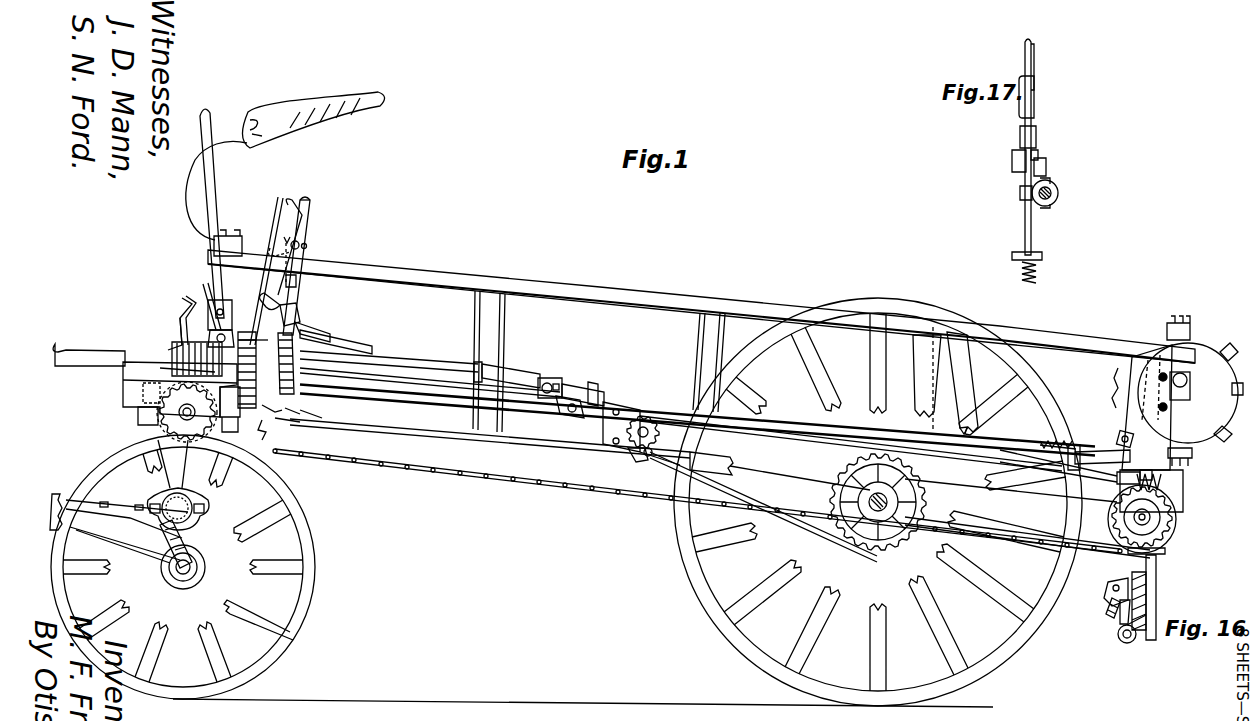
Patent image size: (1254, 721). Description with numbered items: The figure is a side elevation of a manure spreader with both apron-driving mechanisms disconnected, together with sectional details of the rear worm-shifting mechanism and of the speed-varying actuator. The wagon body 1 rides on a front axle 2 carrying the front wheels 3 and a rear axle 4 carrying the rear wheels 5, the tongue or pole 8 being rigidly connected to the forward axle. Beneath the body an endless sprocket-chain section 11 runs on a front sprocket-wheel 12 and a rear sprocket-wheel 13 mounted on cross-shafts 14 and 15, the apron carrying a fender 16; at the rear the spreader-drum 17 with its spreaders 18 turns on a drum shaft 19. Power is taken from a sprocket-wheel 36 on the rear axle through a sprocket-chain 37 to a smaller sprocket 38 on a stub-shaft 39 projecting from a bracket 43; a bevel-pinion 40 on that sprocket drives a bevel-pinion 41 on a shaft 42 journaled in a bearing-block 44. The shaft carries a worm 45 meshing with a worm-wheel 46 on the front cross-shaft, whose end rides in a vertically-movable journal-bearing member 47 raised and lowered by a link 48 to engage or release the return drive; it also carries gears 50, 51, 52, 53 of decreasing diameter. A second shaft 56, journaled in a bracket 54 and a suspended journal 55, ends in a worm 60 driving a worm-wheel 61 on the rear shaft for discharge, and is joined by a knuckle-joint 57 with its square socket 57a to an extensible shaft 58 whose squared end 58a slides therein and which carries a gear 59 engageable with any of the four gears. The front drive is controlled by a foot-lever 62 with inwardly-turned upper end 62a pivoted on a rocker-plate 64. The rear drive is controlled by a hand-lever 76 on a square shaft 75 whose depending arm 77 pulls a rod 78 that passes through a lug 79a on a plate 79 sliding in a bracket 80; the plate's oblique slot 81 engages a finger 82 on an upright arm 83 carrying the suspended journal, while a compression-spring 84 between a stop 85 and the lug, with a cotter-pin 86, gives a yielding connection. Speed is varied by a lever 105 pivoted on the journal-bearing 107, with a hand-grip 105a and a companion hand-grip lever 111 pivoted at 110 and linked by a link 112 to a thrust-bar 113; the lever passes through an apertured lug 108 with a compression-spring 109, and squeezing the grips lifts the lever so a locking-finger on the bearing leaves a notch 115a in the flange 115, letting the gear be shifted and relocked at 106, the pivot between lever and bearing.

In FIG. 1, the body 1 is at (668, 300).
In FIG. 1, the front axle 2 is at (198, 548).
In FIG. 1, the front wheels 3 is at (318, 543).
In FIG. 1, the rear axle 4 is at (878, 502).
In FIG. 1, the rear wheels 5 is at (700, 594).
In FIG. 1, the tongue or pole 8 is at (66, 498).
In FIG. 1, the sprocket-chain section 11 is at (562, 486).
In FIG. 1, the front sprocket-wheel 12 is at (150, 424).
In FIG. 1, the rear sprocket-wheel 13 is at (1176, 530).
In FIG. 1, the front cross-shaft 14 is at (176, 490).
In FIG. 1, the rear cross-shaft 15 is at (1166, 551).
In FIG. 1, the fender 16 is at (1142, 391).
In FIG. 1, the spreader-drum 17 is at (280, 253).
In FIG. 1, the spreaders 18 is at (1195, 456).
In FIG. 1, the drum shaft 19 is at (1188, 372).
In FIG. 1, the sprocket-wheel 36 is at (842, 470).
In FIG. 1, the sprocket-chain 37 is at (798, 516).
In FIG. 1, the smaller sprocket 38 is at (695, 457).
In FIG. 1, the stub-shaft 39 is at (650, 462).
In FIG. 1, the bevel-pinion 40 is at (636, 468).
In FIG. 1, the bevel-pinion 41 is at (622, 455).
In FIG. 1, the shaft 42 is at (536, 422).
In FIG. 1, the bracket 43 is at (636, 408).
In FIG. 1, the bearing-block 44 is at (236, 370).
In FIG. 1, the worm 45 is at (165, 376).
In FIG. 1, the worm-wheel 46 is at (153, 392).
In FIG. 1, the journal-bearing member 47 is at (138, 412).
In FIG. 1, the link 48 is at (187, 412).
In FIG. 1, the gear 50 is at (232, 409).
In FIG. 1, the gear 51 is at (275, 412).
In FIG. 1, the gear 52 is at (300, 414).
In FIG. 1, the gear 53 is at (320, 416).
In FIG. 1, the bracket 54 is at (576, 392).
In FIG. 1, the suspended journal 55 is at (1114, 487).
In FIG. 1, the shaft 56 is at (832, 428).
In FIG. 1, the knuckle-joint 57 is at (548, 380).
In FIG. 1, the square socket 57a is at (512, 372).
In FIG. 1, the shaft 58 is at (412, 362).
In FIG. 1, the squared end 58a is at (468, 374).
In FIG. 1, the gear 59 is at (260, 271).
In FIG. 1, the worm 60 is at (1184, 487).
In FIG. 1, the worm-wheel 61 is at (1172, 512).
In FIG. 1, the foot-lever 62 is at (181, 325).
In FIG. 1, the inwardly-turned upper end 62a is at (183, 300).
In FIG. 1, the rocker-plate 64 is at (172, 355).
In FIG. 1, the square shaft 75 is at (208, 302).
In FIG. 1, the hand-lever 76 is at (218, 150).
In FIG. 1, the depending arm 77 is at (214, 337).
In FIG. 1, the rod 78 is at (440, 398).
In FIG. 1, the plate 79 is at (1112, 450).
In FIG. 1, the lug 79a is at (1058, 475).
In FIG. 1, the bracket 80 is at (1135, 440).
In FIG. 1, the oblique slot 81 is at (1118, 420).
In FIG. 16, the finger 82 is at (1106, 604).
In FIG. 1, the upright arm 83 is at (1154, 474).
In FIG. 1, the compression-spring 84 is at (1056, 433).
In FIG. 1, the stop 85 is at (1042, 444).
In FIG. 1, the cotter-pin 86 is at (1078, 448).
In FIG. 1, the lever 105 is at (304, 266).
In FIG. 1, the hand-grip 105a is at (300, 226).
In FIG. 1, the pivot 106 is at (290, 342).
In FIG. 1, the journal-bearing 107 is at (298, 313).
In FIG. 1, the apertured lug 108 is at (298, 423).
In FIG. 1, the compression-spring 109 is at (274, 435).
In FIG. 1, the pivot 110 is at (306, 243).
In FIG. 1, the companion hand-grip lever 111 is at (313, 207).
In FIG. 1, the link 112 is at (271, 256).
In FIG. 1, the thrust-bar 113 is at (285, 283).
In FIG. 1, the flange 115 is at (305, 325).
In FIG. 1, the notches 115a is at (285, 308).